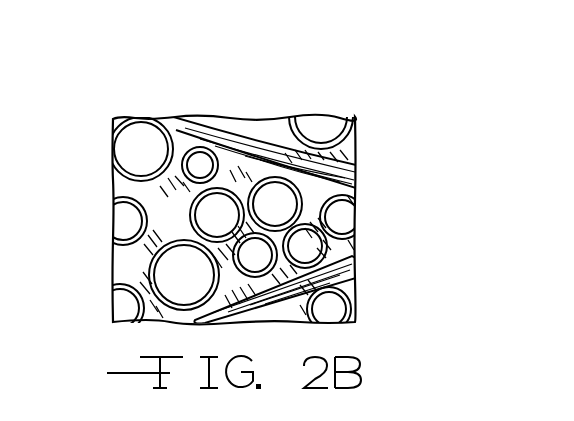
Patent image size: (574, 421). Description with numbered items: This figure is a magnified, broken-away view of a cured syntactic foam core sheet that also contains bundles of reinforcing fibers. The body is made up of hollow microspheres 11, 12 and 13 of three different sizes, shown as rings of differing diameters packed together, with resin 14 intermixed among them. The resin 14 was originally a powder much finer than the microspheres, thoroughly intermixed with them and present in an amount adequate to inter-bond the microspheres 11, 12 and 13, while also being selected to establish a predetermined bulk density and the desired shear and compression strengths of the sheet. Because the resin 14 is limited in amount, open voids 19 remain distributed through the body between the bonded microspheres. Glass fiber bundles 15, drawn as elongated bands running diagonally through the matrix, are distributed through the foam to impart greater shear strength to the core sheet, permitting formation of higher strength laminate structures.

The hollow microsphere 11 is at (128, 213).
The hollow microsphere 12 is at (150, 122).
The hollow microsphere 13 is at (201, 146).
The resin 14 is at (352, 151).
The glass fiber bundle 15 is at (243, 143).
The void 19 is at (315, 195).